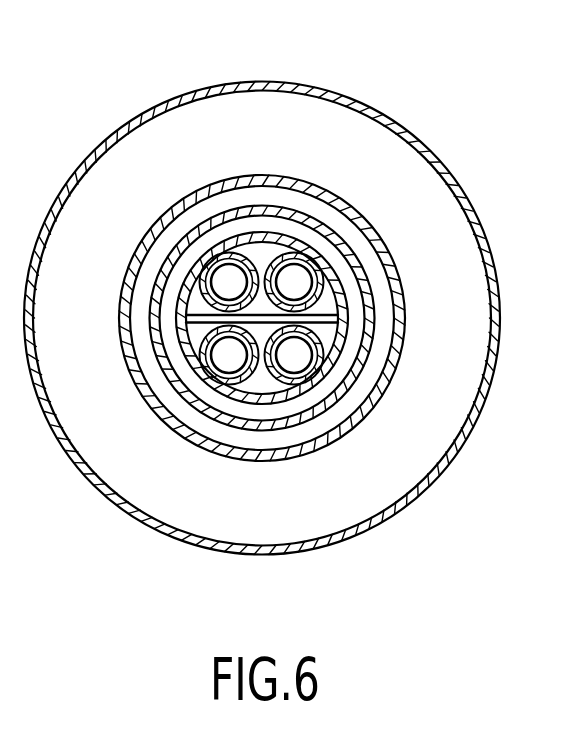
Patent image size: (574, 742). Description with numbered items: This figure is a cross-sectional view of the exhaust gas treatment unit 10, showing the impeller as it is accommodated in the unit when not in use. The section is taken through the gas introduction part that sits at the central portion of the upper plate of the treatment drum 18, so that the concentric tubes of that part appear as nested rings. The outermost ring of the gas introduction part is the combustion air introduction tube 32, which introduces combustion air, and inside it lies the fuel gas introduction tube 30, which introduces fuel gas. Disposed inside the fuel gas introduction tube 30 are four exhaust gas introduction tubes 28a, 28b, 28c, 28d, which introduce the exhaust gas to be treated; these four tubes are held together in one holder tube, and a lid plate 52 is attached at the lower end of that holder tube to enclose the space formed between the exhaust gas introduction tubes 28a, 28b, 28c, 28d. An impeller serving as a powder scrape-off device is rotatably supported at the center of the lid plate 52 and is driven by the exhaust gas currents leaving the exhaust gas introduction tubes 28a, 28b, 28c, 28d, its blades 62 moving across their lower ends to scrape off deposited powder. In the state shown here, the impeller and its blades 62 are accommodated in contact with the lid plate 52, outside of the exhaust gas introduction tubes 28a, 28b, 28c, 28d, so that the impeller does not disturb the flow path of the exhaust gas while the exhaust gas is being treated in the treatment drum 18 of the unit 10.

The exhaust gas treatment unit 10 is at (437, 108).
The treatment drum 18 is at (447, 166).
The combustion air introduction tube 32 is at (407, 297).
The fuel gas introduction tube 30 is at (352, 228).
The blades 62 is at (343, 347).
The lid plate 52 is at (263, 243).
The exhaust gas introduction tube 28a is at (228, 253).
The exhaust gas introduction tube 28b is at (297, 256).
The exhaust gas introduction tube 28c is at (325, 348).
The exhaust gas introduction tube 28d is at (223, 382).